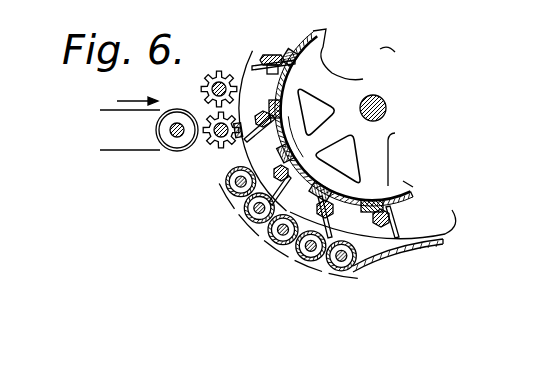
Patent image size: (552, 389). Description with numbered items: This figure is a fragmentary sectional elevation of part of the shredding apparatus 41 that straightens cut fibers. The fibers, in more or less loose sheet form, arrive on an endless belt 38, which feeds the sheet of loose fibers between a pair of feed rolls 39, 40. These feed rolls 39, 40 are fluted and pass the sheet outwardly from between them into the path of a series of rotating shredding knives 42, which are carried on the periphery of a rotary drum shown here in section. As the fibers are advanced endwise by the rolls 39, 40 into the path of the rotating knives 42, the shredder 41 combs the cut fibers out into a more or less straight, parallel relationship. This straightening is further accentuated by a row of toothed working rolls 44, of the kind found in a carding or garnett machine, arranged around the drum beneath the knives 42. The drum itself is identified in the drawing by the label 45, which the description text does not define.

The endless belt 38 is at (158, 109).
The feed roll 39 is at (219, 71).
The feed roll 40 is at (214, 143).
The shredding apparatus 41 is at (453, 210).
The shredding knives 42 is at (256, 55).
The toothed working rolls 44 is at (237, 206).
The wheel 45 is at (331, 88).